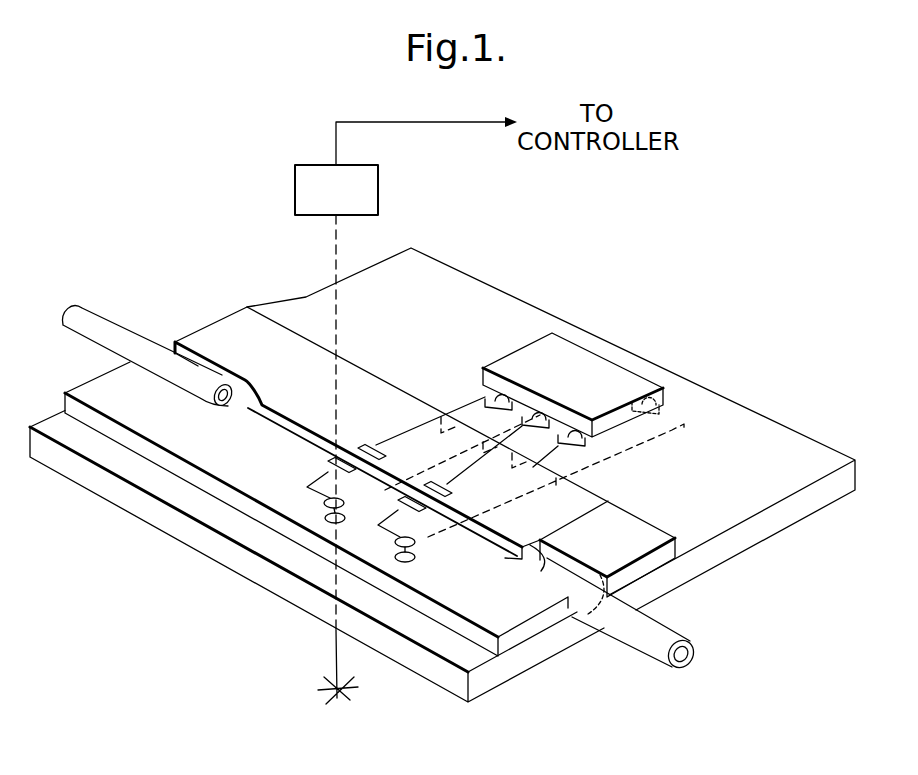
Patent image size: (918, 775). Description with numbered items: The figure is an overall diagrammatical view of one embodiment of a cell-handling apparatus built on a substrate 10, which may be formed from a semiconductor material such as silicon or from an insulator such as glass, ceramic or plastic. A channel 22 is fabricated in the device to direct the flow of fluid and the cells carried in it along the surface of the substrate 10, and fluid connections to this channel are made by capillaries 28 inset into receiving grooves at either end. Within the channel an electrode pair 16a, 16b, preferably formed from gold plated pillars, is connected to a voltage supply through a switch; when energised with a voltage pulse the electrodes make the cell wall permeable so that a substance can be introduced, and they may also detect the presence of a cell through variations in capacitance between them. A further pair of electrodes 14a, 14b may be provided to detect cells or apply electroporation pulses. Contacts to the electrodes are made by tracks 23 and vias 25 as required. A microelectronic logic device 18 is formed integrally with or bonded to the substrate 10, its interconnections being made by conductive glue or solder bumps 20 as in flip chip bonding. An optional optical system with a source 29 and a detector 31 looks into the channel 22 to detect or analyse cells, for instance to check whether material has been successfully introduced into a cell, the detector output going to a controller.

The substrate 10 is at (772, 522).
The further electrode 14a is at (328, 462).
The further electrode 14b is at (363, 445).
The electrode 16a is at (428, 508).
The electrode 16b is at (448, 493).
The microelectronic logic device 18 is at (592, 366).
The solder bumps 20 is at (659, 407).
The channel 22 is at (508, 542).
The tracks 23 is at (413, 426).
The vias 25 is at (395, 558).
The capillaries 28 is at (112, 333).
The source 29 is at (338, 690).
The detector 31 is at (307, 172).